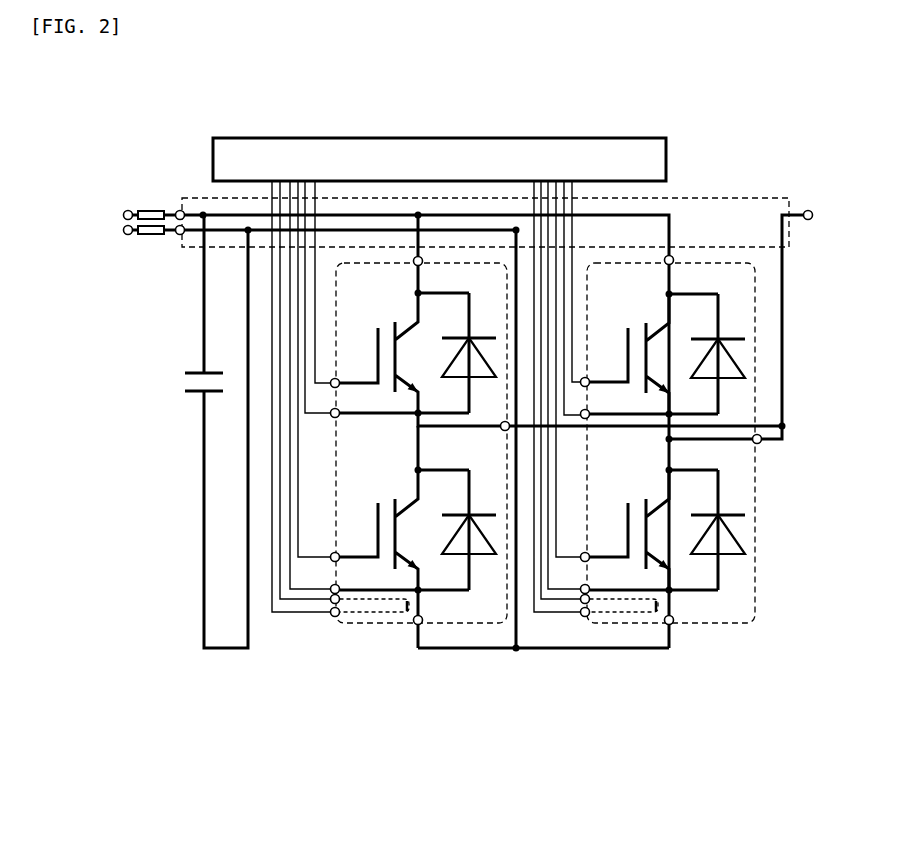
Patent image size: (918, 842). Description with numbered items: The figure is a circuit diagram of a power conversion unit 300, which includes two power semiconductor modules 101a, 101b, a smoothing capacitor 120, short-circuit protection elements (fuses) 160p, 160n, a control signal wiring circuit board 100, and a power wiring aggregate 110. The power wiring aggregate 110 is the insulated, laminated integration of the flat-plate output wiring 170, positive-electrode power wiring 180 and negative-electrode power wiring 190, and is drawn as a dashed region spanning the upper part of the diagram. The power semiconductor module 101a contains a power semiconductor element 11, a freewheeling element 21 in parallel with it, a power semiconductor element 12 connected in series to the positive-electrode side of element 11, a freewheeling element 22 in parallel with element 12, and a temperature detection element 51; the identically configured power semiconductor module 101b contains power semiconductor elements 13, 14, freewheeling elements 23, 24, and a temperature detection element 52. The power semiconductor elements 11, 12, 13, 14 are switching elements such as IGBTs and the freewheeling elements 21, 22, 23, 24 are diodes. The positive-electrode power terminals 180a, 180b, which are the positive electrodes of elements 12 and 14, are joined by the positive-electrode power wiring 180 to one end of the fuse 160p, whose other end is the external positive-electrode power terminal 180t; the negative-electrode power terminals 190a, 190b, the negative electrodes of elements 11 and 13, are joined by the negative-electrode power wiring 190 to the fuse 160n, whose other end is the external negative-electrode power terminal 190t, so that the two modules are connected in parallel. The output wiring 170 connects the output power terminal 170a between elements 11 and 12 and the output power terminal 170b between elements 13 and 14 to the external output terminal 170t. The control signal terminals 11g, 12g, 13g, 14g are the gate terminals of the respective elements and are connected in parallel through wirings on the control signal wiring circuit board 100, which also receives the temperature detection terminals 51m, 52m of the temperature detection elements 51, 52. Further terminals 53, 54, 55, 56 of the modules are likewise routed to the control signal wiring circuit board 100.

The power conversion unit 300 is at (137, 124).
The control signal wiring circuit board 100 is at (628, 137).
The power wiring aggregate 110 is at (722, 196).
The positive-electrode power wiring 180 is at (672, 212).
The negative-electrode power wiring 190 is at (498, 650).
The output wiring 170 is at (785, 212).
The external positive-electrode power terminal 180t is at (128, 208).
The external negative-electrode power terminal 190t is at (128, 237).
The external output terminal 170t is at (810, 222).
The positive-electrode side short-circuit protection element 160p is at (151, 208).
The negative-electrode side short-circuit protection element 160n is at (151, 237).
The smoothing capacitor 120 is at (196, 370).
The power semiconductor module 101a is at (362, 623).
The power semiconductor module 101b is at (625, 623).
The positive-electrode power terminal 180a is at (423, 264).
The positive-electrode power terminal 180b is at (674, 264).
The negative-electrode power terminal 190a is at (423, 624).
The negative-electrode power terminal 190b is at (674, 624).
The output power terminal 170a is at (502, 430).
The output power terminal 170b is at (754, 443).
The power semiconductor element 11 is at (402, 493).
The power semiconductor element 12 is at (402, 316).
The power semiconductor element 13 is at (653, 493).
The power semiconductor element 14 is at (653, 316).
The freewheeling element 21 is at (492, 506).
The freewheeling element 22 is at (492, 331).
The freewheeling element 23 is at (741, 506).
The freewheeling element 24 is at (741, 331).
The control signal terminal 11g is at (338, 553).
The control signal terminal 12g is at (338, 379).
The control signal terminal 13g is at (588, 553).
The control signal terminal 14g is at (588, 379).
The upper arm emitter sense terminal 53 is at (330, 418).
The lower arm emitter sense terminal 54 is at (328, 586).
The sensor terminal 55 is at (286, 602).
The sensor terminal 56 is at (580, 602).
The temperature detection element 51 is at (407, 616).
The temperature detection element 52 is at (657, 616).
The temperature detection terminal 51m is at (331, 614).
The temperature detection terminal 52m is at (581, 615).